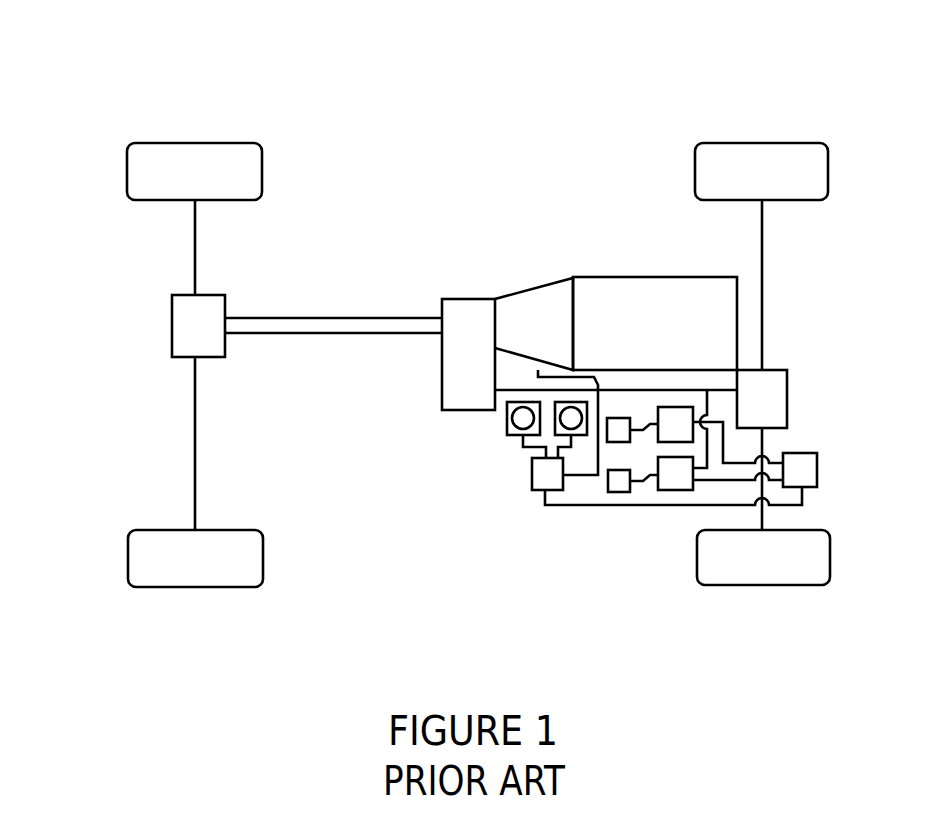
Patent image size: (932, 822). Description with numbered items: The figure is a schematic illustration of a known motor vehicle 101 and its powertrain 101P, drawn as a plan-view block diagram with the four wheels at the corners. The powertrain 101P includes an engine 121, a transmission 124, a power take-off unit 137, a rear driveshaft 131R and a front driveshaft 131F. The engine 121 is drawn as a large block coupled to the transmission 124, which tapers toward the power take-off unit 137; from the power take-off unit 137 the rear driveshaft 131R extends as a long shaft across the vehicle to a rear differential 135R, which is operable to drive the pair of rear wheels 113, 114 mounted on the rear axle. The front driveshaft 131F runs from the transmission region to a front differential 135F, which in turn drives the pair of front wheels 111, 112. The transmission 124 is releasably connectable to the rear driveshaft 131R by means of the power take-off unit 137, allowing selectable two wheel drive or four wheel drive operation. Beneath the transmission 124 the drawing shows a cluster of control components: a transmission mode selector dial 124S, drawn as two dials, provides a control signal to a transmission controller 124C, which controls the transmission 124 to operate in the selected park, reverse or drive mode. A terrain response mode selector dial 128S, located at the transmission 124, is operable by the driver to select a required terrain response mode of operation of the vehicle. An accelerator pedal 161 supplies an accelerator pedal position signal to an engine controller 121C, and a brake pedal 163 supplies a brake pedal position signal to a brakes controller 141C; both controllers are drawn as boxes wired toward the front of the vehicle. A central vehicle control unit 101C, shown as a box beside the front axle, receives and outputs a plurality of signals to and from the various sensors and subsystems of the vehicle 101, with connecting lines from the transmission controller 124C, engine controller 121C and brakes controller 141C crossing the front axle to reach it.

The motor vehicle 101 is at (728, 102).
The powertrain 101P is at (647, 173).
The vehicle control unit 101C is at (800, 470).
The front wheel 111 is at (810, 143).
The front wheel 112 is at (812, 587).
The rear wheel 113 is at (157, 145).
The rear wheel 114 is at (158, 588).
The engine 121 is at (659, 292).
The engine controller 121C is at (677, 477).
The transmission 124 is at (557, 305).
The transmission mode selector dial 124S is at (503, 420).
The transmission controller 124C is at (543, 482).
The terrain response mode selector dial 128S is at (562, 392).
The rear driveshaft 131R is at (325, 325).
The front driveshaft 131F is at (727, 390).
The rear differential 135R is at (193, 334).
The front differential 135F is at (775, 398).
The power take-off unit 137 is at (463, 316).
The brakes controller 141C is at (676, 407).
The accelerator pedal 161 is at (620, 478).
The brake pedal 163 is at (618, 432).